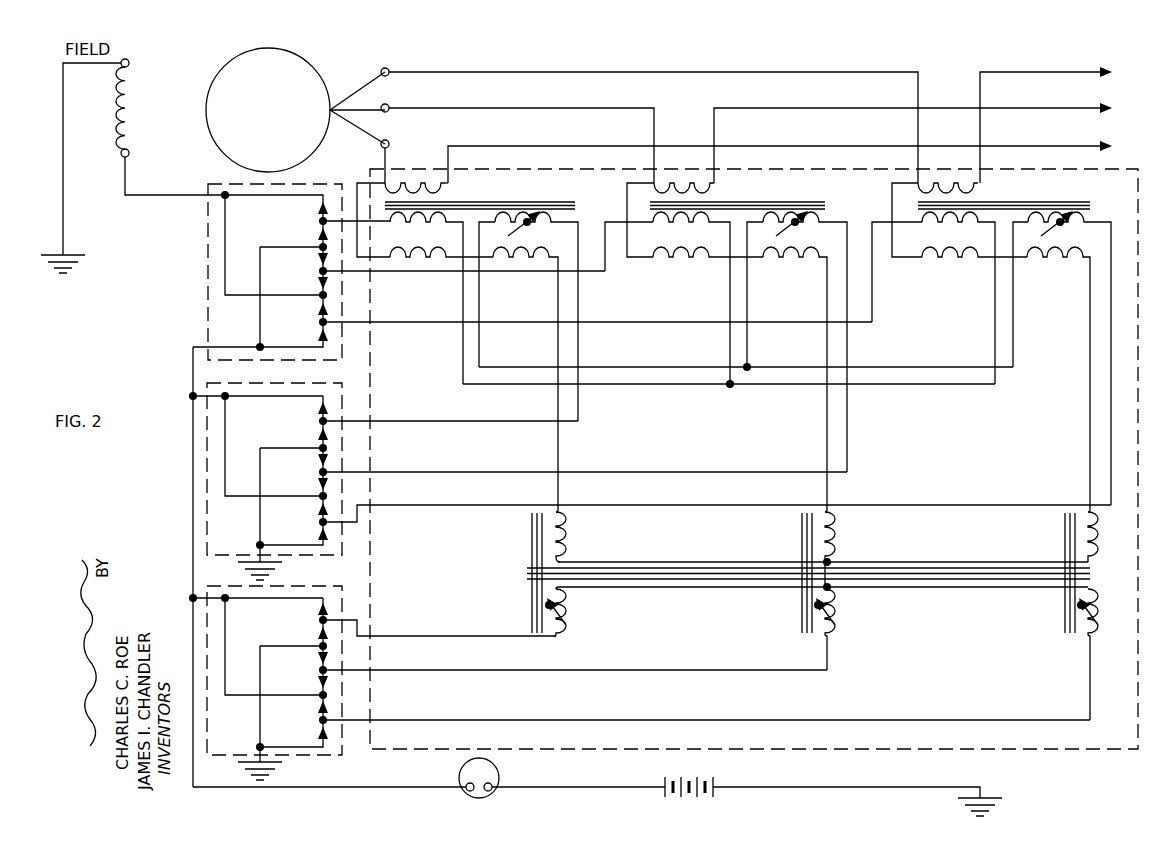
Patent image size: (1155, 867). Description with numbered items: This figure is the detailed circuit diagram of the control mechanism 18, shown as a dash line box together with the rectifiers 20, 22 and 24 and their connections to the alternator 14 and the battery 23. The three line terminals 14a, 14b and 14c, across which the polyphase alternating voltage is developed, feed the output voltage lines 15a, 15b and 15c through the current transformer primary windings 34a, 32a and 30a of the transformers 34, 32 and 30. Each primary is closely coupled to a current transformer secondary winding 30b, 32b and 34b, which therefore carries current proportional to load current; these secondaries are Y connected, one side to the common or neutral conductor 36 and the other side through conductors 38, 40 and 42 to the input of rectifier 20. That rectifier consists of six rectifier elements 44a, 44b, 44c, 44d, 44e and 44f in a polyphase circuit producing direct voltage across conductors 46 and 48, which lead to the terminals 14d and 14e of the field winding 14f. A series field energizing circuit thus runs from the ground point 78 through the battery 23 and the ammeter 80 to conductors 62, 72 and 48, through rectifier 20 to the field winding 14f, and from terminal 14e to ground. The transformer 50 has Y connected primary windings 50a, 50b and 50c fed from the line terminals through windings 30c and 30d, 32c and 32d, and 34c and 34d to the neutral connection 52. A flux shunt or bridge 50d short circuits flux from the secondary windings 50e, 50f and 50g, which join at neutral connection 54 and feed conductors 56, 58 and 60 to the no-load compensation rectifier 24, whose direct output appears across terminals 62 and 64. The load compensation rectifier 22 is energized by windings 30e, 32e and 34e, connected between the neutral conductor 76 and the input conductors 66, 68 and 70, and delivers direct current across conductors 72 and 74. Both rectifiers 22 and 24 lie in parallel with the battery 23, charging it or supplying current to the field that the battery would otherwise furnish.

The alternator 14 is at (313, 66).
The line terminal 14a is at (387, 68).
The line terminal 14b is at (387, 104).
The line terminal 14c is at (387, 140).
The field winding terminal 14d is at (129, 156).
The field winding terminal 14e is at (130, 61).
The field winding 14f is at (134, 108).
The output voltage line 15a is at (1043, 72).
The output voltage line 15b is at (1043, 108).
The output voltage line 15c is at (1043, 146).
The control mechanism 18 is at (1082, 749).
The rectifier 20 is at (208, 212).
The rectifier 22 is at (207, 455).
The battery 23 is at (660, 798).
The rectifier 24 is at (215, 755).
The transformer 30 is at (470, 197).
The current transformer primary winding 30a is at (420, 178).
The current transformer secondary winding 30b is at (419, 234).
The winding 30c is at (420, 267).
The winding 30d is at (523, 267).
The winding 30e is at (530, 232).
The transformer 32 is at (745, 197).
The current transformer primary winding 32a is at (690, 178).
The current transformer secondary winding 32b is at (682, 234).
The winding 32c is at (683, 267).
The winding 32d is at (793, 267).
The winding 32e is at (798, 232).
The transformer 34 is at (1005, 197).
The current transformer primary winding 34a is at (952, 178).
The current transformer secondary winding 34b is at (951, 234).
The winding 34c is at (952, 267).
The winding 34d is at (1057, 267).
The winding 34e is at (1063, 232).
The common or neutral conductor 36 is at (463, 380).
The conductor 38 is at (350, 200).
The conductor 40 is at (370, 271).
The conductor 42 is at (400, 322).
The rectifier element 44a is at (318, 208).
The rectifier element 44b is at (318, 234).
The rectifier element 44c is at (318, 259).
The rectifier element 44d is at (318, 283).
The rectifier element 44e is at (318, 309).
The rectifier element 44f is at (318, 335).
The D.-C. output conductor 46 is at (145, 195).
The D.-C. output conductor 48 is at (193, 347).
The transformer 50 is at (808, 556).
The primary winding 50a is at (566, 540).
The primary winding 50b is at (835, 540).
The primary winding 50c is at (1098, 540).
The flux shunt or bridge 50d is at (750, 568).
The secondary winding 50e is at (566, 615).
The secondary winding 50f is at (835, 612).
The secondary winding 50g is at (1098, 622).
The common or neutral connection 52 is at (643, 562).
The common or neutral connection 54 is at (670, 587).
The conductor 56 is at (352, 620).
The conductor 58 is at (352, 670).
The conductor 60 is at (352, 720).
The D.-C. output terminal 62 is at (193, 598).
The D.-C. output terminal 64 is at (268, 766).
The A.-C. input conductor 66 is at (352, 421).
The A.-C. input conductor 68 is at (352, 472).
The A.-C. input conductor 70 is at (357, 522).
The D.-C. output conductor 72 is at (193, 400).
The D.-C. output conductor 74 is at (268, 566).
The common or neutral conductor 76 is at (600, 367).
The ground point 78 is at (982, 794).
The ammeter 80 is at (466, 793).